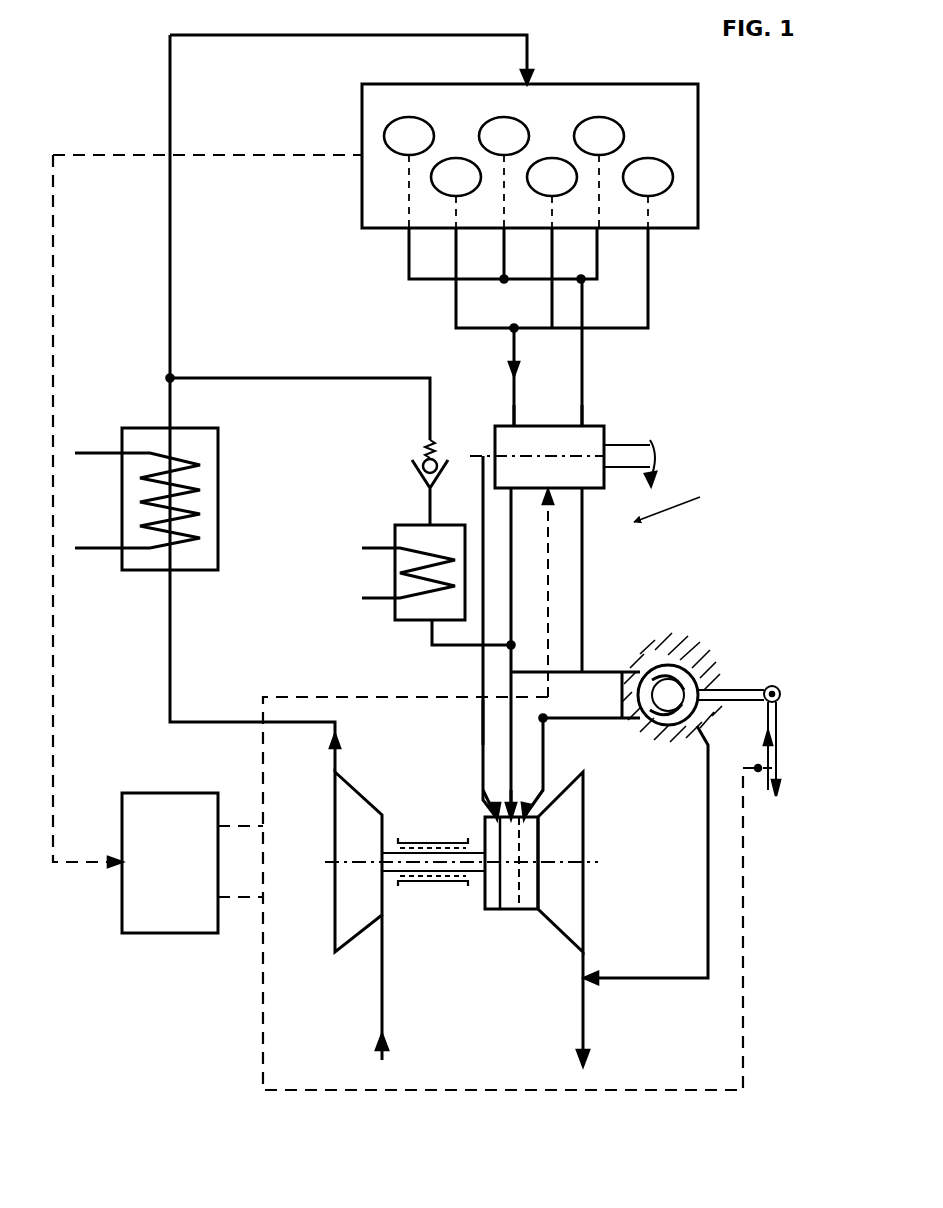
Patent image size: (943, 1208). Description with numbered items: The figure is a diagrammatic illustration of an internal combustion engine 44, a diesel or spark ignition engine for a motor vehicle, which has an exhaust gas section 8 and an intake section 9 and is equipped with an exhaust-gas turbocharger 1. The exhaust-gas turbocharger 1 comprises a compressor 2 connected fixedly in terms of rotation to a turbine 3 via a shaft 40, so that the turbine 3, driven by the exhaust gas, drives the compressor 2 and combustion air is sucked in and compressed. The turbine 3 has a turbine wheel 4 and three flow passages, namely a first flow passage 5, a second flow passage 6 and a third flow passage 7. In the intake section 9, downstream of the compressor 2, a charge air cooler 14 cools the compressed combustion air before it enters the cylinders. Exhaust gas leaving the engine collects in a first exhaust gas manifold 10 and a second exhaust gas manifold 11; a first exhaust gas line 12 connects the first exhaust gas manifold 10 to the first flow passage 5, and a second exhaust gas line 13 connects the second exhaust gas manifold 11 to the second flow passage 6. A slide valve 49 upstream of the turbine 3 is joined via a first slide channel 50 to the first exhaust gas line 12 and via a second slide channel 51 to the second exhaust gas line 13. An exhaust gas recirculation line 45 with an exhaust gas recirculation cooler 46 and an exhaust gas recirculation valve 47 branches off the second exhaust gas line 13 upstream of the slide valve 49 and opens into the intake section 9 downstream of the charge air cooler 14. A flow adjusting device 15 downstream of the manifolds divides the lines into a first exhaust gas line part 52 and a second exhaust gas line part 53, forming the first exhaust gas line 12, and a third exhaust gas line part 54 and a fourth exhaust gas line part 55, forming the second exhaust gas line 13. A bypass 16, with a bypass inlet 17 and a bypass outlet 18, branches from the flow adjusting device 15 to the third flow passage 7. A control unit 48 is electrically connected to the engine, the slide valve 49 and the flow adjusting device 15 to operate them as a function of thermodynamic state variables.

The exhaust-gas turbocharger 1 is at (452, 922).
The compressor 2 is at (358, 946).
The turbine 3 is at (554, 926).
The turbine wheel 4 is at (522, 845).
The first flow passage 5 is at (529, 812).
The second flow passage 6 is at (514, 812).
The third flow passage 7 is at (490, 814).
The exhaust gas section 8 is at (676, 501).
The intake section 9 is at (152, 690).
The first exhaust gas manifold 10 is at (406, 272).
The second exhaust gas manifold 11 is at (650, 292).
The first exhaust gas line 12 is at (586, 370).
The second exhaust gas line 13 is at (510, 372).
The charge air cooler 14 is at (222, 550).
The flow adjusting device 15 is at (608, 430).
The bypass 16 is at (480, 722).
The bypass inlet 17 is at (484, 454).
The bypass outlet 18 is at (494, 810).
The shaft 40 is at (388, 872).
The internal combustion engine 44 is at (700, 182).
The exhaust gas recirculation line 45 is at (302, 377).
The exhaust gas recirculation cooler 46 is at (410, 622).
The exhaust gas recirculation valve 47 is at (420, 456).
The control unit 48 is at (164, 934).
The slide valve 49 is at (702, 650).
The first slide channel 50 is at (604, 718).
The second slide channel 51 is at (604, 670).
The first exhaust gas line part 52 is at (584, 412).
The second exhaust gas line part 53 is at (584, 546).
The third exhaust gas line part 54 is at (516, 412).
The fourth exhaust gas line part 55 is at (516, 534).